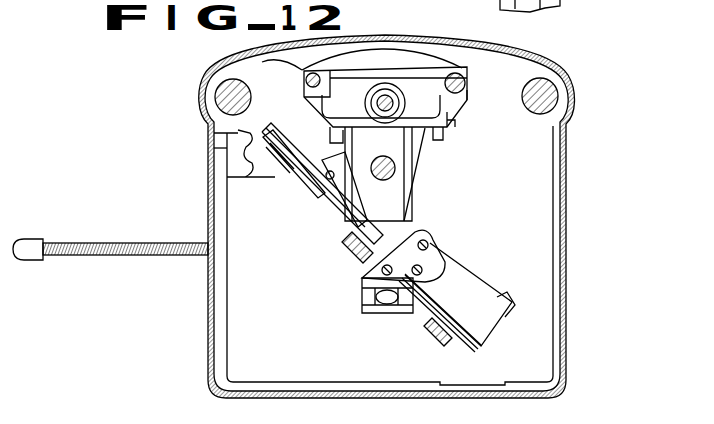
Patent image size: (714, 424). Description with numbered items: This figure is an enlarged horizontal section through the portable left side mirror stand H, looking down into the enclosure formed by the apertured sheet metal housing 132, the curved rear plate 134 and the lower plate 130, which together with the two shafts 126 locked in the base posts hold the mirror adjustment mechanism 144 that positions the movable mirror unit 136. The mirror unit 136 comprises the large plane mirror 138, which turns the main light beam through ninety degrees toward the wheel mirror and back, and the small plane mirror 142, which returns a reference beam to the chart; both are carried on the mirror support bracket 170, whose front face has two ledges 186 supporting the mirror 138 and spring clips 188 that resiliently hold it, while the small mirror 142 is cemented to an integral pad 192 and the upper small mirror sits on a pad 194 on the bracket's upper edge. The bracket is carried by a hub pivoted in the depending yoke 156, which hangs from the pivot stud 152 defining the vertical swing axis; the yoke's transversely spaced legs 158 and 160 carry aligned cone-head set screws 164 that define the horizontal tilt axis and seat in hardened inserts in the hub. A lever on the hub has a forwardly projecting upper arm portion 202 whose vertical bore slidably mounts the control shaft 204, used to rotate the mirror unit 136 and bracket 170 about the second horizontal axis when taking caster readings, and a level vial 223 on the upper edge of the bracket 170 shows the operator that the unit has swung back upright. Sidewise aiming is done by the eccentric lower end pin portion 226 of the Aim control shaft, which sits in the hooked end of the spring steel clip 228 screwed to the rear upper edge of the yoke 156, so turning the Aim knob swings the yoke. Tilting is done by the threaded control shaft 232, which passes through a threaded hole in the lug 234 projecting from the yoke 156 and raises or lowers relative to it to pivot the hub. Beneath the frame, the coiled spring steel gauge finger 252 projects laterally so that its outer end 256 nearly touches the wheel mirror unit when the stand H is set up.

The shaft 126 is at (218, 92).
The lower plate 130 is at (210, 318).
The sheet metal housing 132 is at (218, 336).
The curved rear plate 134 is at (558, 62).
The mirror unit 136 is at (412, 193).
The large plane mirror 138 is at (340, 209).
The small plane mirror 142 is at (246, 175).
The mirror adjustment mechanism 144 is at (449, 66).
The pivot stud 152 is at (373, 102).
The yoke 156 is at (466, 96).
The leg 158 is at (443, 139).
The leg 160 is at (332, 142).
The cone-head set screw 164 is at (455, 119).
The mirror support bracket 170 is at (460, 282).
The ledge 186 is at (312, 186).
The spring clip 188 is at (350, 242).
The pad 192 is at (214, 133).
The pad 194 is at (441, 253).
The upper arm portion 202 is at (395, 220).
The control shaft 204 is at (395, 170).
The level vial 223 is at (370, 297).
The eccentric lower end pin portion 226 is at (336, 84).
The spring steel clip 228 is at (302, 69).
The threaded control shaft 232 is at (467, 80).
The lug 234 is at (467, 68).
The gauge finger 252 is at (162, 256).
The outer end 256 is at (36, 240).
The portable left side mirror stand H is at (212, 153).